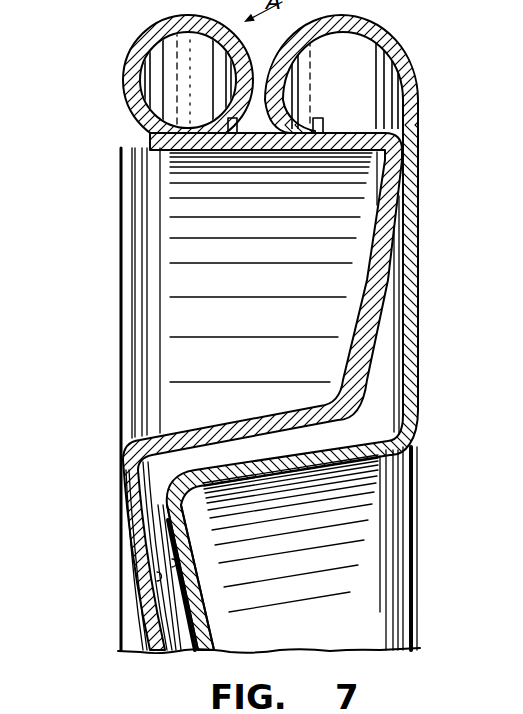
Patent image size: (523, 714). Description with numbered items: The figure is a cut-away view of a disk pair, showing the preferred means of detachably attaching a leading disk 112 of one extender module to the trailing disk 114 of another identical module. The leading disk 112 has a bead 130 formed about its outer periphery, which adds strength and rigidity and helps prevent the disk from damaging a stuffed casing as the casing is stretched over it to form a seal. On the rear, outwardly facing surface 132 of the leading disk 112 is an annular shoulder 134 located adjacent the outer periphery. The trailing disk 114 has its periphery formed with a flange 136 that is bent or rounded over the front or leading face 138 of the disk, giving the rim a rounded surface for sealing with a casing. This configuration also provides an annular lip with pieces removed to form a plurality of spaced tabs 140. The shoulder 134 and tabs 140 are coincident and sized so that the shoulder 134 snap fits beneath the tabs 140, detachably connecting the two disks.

The leading disk 112 is at (112, 538).
The trailing disk 114 is at (224, 616).
The bead 130 is at (163, 24).
The outwardly facing surface 132 is at (153, 580).
The annular shoulder 134 is at (366, 283).
The flange 136 is at (394, 32).
The leading face 138 is at (197, 568).
The tabs 140 is at (309, 117).